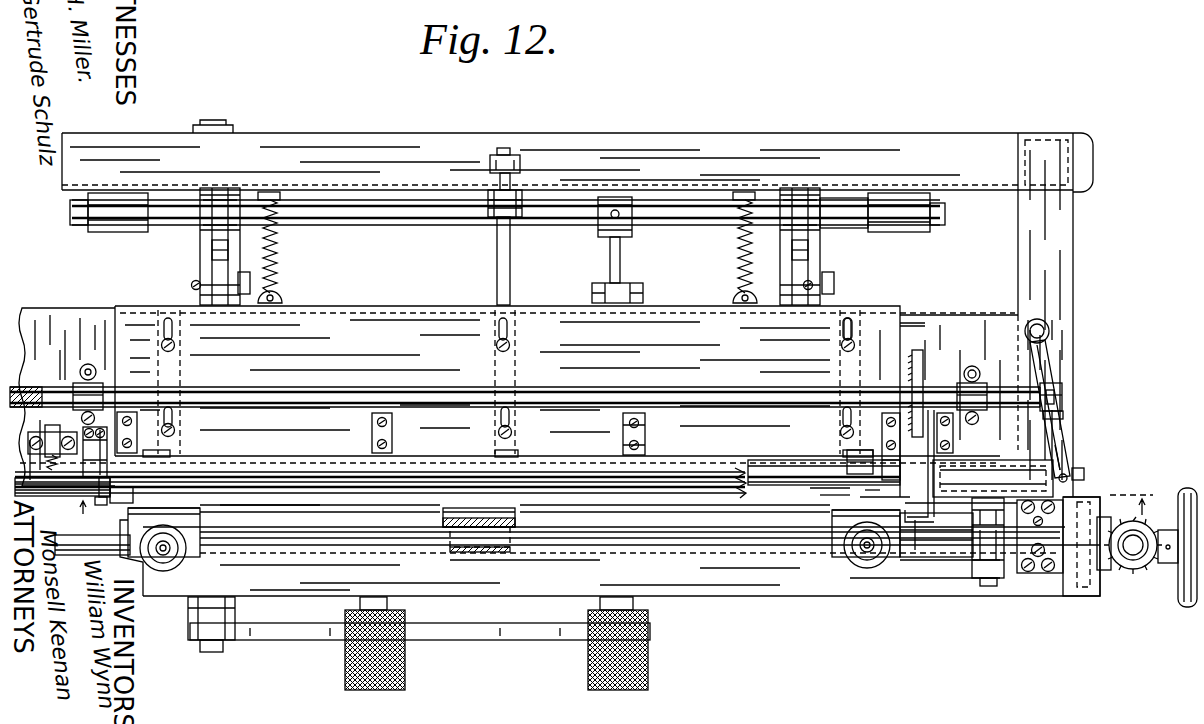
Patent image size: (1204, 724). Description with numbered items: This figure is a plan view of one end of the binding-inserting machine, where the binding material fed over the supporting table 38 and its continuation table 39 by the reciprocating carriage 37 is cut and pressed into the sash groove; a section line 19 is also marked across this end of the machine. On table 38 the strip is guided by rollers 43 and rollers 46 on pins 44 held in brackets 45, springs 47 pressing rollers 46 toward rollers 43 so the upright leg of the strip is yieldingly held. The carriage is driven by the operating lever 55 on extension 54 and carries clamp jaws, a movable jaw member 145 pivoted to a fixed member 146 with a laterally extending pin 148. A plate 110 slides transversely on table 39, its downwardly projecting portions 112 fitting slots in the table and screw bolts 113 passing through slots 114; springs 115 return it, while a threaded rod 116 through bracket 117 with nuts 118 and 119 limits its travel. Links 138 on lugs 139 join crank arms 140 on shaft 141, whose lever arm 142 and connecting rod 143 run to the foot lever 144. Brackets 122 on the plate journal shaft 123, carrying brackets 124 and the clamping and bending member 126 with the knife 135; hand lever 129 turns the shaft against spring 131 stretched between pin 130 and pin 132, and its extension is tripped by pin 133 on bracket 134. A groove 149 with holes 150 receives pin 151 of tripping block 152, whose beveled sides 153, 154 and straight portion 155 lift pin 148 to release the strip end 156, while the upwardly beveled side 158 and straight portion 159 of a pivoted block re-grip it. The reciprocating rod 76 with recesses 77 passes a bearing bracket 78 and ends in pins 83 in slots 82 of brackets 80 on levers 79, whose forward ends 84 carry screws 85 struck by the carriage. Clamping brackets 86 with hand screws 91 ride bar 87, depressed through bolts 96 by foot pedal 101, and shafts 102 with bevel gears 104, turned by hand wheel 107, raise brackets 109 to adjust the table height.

The crank arms 140 is at (218, 185).
The nuts 119 is at (512, 155).
The bracket 117 is at (512, 196).
The nuts 118 is at (490, 226).
The threaded rod 116 is at (510, 245).
The lever arm 142 is at (621, 255).
The adjustable link or connecting rod 143 is at (625, 290).
The springs 115 is at (283, 255).
The links 138 is at (205, 248).
The lugs 139 is at (200, 283).
The shaft 141 is at (955, 226).
The plate 110 is at (822, 318).
The pin 132 is at (912, 322).
The supporting table 38 is at (58, 325).
The recesses 77 is at (96, 368).
The screw bolts 113 is at (175, 343).
The knife 135 is at (118, 410).
The brackets 45 is at (36, 432).
The pins 44 is at (60, 430).
The pin 151 is at (483, 446).
The brackets 122 is at (137, 418).
The slots 114 is at (176, 428).
The brackets 124 is at (175, 452).
The longitudinally reciprocating rod 76 is at (680, 387).
The clamping and bending member 126 is at (735, 460).
The shaft or rod 123 is at (768, 460).
The hand lever 129 is at (852, 338).
The spring 131 is at (924, 370).
The supporting table 39 is at (1020, 399).
The levers 79 is at (1050, 342).
The brackets 80 is at (1062, 385).
The pins 83 is at (1062, 393).
The slots 82 is at (1062, 412).
The bearing 78 is at (975, 385).
The tripping block 152 is at (862, 450).
The bracket 134 is at (950, 455).
The downwardly projecting portions 112 is at (965, 470).
The movable jaw member 145 is at (993, 475).
The reciprocating carriage or bar 37 is at (1032, 460).
The forward ends 84 is at (1068, 455).
The screws 85 is at (1085, 472).
The fixed member 146 is at (985, 488).
The brackets 109 is at (1108, 515).
The shaft 19 is at (618, 510).
The springs 47 is at (60, 462).
The rollers 46 is at (33, 497).
The rollers 43 is at (55, 535).
The upwardly beveled side 158 is at (125, 498).
The end of the binding material 156 is at (115, 505).
The straight portion 159 is at (96, 510).
The clamping brackets 86 is at (203, 506).
The bar 87 is at (648, 525).
The holes 150 is at (792, 490).
The groove 149 is at (830, 494).
The beveled side 153 is at (838, 498).
The beveled side 154 is at (882, 499).
The straight portion 155 is at (844, 509).
The pin 130 is at (885, 510).
The pin 133 is at (934, 512).
The laterally extending pin 148 is at (940, 556).
The hand screw 91 is at (190, 555).
The bolts 96 is at (990, 590).
The shafts 102 is at (1127, 570).
The bevel gears 104 is at (1138, 568).
The hand wheel 107 is at (1190, 608).
The extension 54 is at (210, 652).
The operating lever 55 is at (508, 642).
The foot pedal 101 is at (407, 662).
The foot lever 144 is at (650, 668).